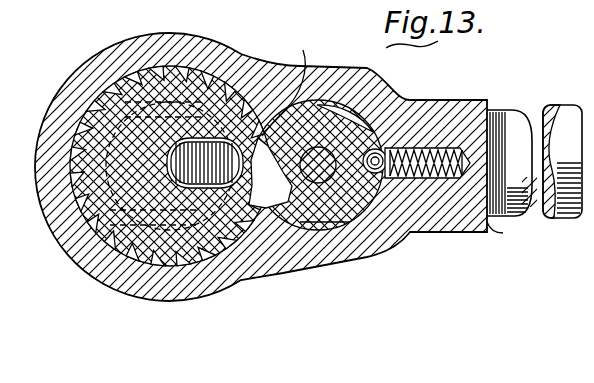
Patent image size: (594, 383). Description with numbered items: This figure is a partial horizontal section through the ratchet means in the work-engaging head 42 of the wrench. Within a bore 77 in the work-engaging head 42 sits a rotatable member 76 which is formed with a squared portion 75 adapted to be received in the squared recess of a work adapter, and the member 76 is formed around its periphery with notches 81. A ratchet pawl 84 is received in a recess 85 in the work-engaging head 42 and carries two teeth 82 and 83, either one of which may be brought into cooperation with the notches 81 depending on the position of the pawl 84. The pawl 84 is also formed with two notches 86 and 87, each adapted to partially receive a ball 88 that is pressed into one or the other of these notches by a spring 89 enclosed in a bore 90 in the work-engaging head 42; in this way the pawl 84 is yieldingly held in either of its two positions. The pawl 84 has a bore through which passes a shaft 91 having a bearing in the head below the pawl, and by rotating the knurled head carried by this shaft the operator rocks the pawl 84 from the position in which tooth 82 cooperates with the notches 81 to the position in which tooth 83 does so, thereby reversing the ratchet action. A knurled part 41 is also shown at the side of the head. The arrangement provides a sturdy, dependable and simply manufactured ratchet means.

The knob 41 is at (562, 203).
The work-engaging head 42 is at (72, 78).
The squared portion 75 is at (140, 78).
The member 76 is at (110, 218).
The bore 77 is at (207, 70).
The notches 81 is at (245, 52).
The tooth 82 is at (285, 228).
The tooth 83 is at (299, 90).
The ratchet pawl 84 is at (348, 205).
The recess 85 is at (377, 78).
The notch 86 is at (381, 188).
The notch 87 is at (407, 103).
The ball 88 is at (370, 183).
The spring 89 is at (450, 117).
The bore 90 is at (494, 235).
The shaft 91 is at (323, 203).